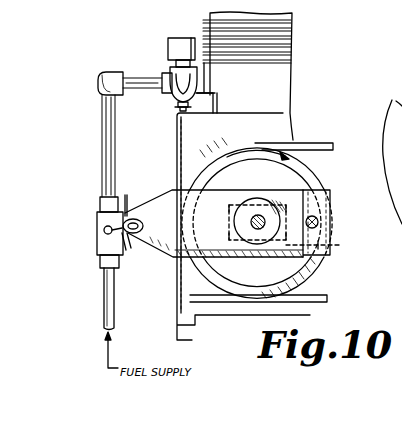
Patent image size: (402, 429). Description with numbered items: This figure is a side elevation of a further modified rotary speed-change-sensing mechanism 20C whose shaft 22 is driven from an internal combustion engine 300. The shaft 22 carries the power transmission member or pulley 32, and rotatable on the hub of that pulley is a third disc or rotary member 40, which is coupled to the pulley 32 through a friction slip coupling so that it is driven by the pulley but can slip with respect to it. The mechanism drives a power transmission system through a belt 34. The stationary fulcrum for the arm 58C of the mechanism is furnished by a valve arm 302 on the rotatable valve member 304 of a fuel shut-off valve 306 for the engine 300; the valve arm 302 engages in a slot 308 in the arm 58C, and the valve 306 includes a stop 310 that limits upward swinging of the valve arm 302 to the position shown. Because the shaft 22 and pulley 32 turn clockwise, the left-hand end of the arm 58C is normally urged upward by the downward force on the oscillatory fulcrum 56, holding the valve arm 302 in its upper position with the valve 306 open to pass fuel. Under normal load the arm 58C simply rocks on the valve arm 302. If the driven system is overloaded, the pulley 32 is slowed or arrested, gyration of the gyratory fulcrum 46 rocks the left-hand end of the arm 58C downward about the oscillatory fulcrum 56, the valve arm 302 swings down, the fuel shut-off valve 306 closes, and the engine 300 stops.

The internal combustion engine 300 is at (291, 69).
The rotary speed-change-sensing mechanism 20C is at (298, 146).
The belt 34 is at (320, 146).
The power transmission member 32 is at (226, 146).
The rotary member 40 is at (297, 183).
The arm 58C is at (166, 176).
The shaft 22 is at (257, 229).
The oscillatory fulcrum 56 is at (320, 223).
The gyratory fulcrum 46 is at (326, 247).
The fuel shut-off valve 306 is at (96, 256).
The rotatable valve member 304 is at (104, 230).
The stop 310 is at (114, 228).
The slot 308 is at (141, 223).
The valve arm 302 is at (126, 239).